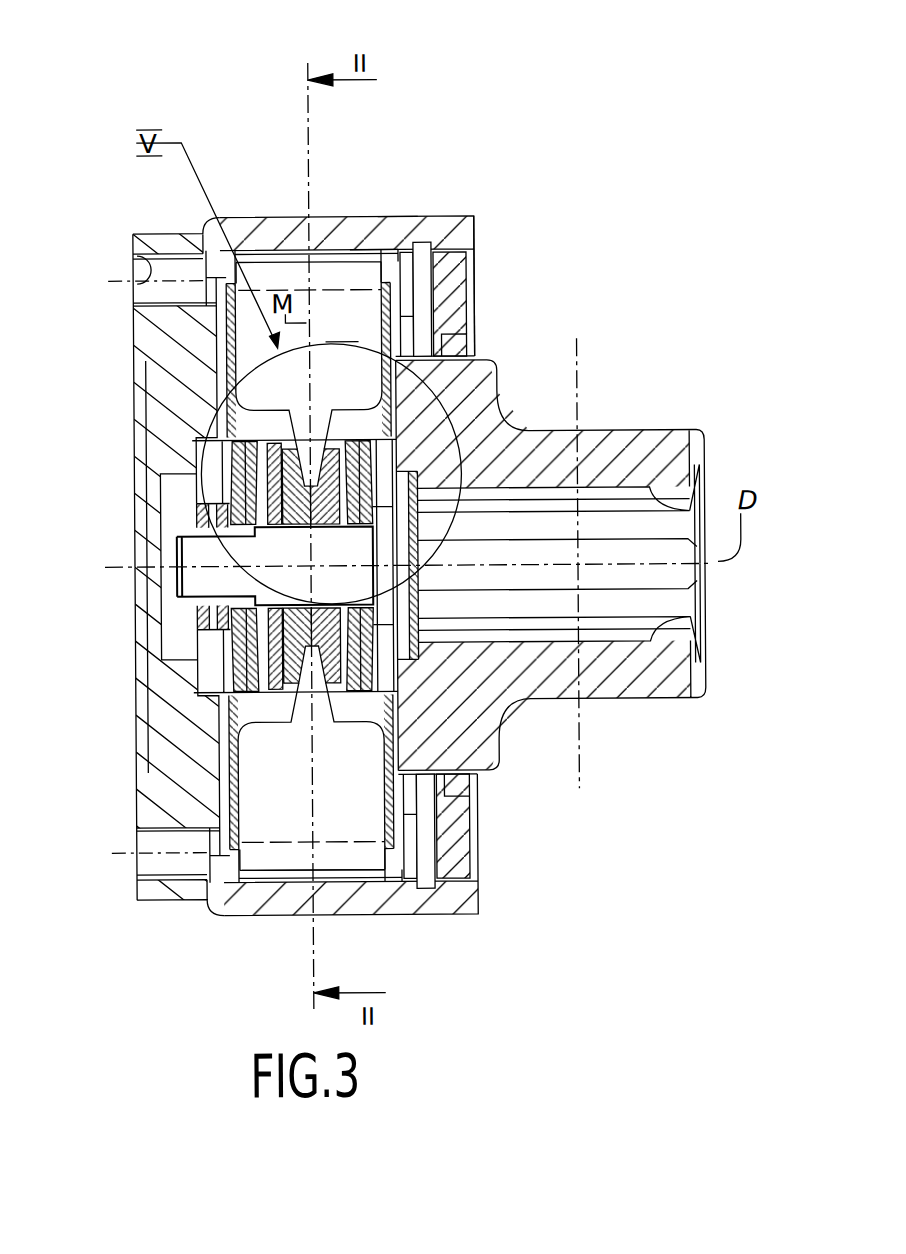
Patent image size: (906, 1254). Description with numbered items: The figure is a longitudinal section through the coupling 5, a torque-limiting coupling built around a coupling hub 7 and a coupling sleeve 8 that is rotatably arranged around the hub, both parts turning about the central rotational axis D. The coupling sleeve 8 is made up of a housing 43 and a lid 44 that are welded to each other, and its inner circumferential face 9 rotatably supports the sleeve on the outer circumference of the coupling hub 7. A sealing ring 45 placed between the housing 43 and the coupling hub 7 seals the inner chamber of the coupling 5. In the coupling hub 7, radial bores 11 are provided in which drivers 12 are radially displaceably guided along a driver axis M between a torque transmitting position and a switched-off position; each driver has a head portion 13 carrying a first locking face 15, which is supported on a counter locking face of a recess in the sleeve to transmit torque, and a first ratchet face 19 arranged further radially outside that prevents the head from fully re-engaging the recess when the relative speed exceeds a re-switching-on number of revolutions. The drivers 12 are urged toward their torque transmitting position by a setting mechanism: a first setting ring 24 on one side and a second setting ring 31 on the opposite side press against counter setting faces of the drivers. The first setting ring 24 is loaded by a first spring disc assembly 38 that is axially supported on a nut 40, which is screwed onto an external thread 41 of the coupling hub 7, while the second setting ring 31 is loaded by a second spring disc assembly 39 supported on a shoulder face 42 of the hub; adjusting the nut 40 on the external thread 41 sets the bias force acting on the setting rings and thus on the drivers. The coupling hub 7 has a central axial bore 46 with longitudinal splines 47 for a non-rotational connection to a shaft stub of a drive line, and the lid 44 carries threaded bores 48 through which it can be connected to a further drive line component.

The coupling 5 is at (465, 114).
The coupling hub 7 is at (549, 425).
The coupling sleeve 8 is at (400, 212).
The inner circumferential face 9 is at (375, 250).
The radial bores 11 is at (384, 370).
The drivers 12 is at (346, 326).
The head portions 13 is at (250, 236).
The first locking face 15 is at (283, 268).
The first ratchet face 19 is at (321, 254).
The first setting ring 24 is at (275, 566).
The second setting ring 31 is at (359, 532).
The first spring disc assembly 38 is at (238, 477).
The second spring disc assembly 39 is at (368, 575).
The nut 40 is at (197, 513).
The external thread 41 is at (200, 636).
The shoulder face 42 is at (353, 698).
The housing 43 is at (421, 250).
The lid 44 is at (157, 345).
The sealing ring 45 is at (449, 278).
The central axial bore 46 is at (692, 499).
The longitudinal splines 47 is at (669, 607).
The threaded bores 48 is at (152, 262).